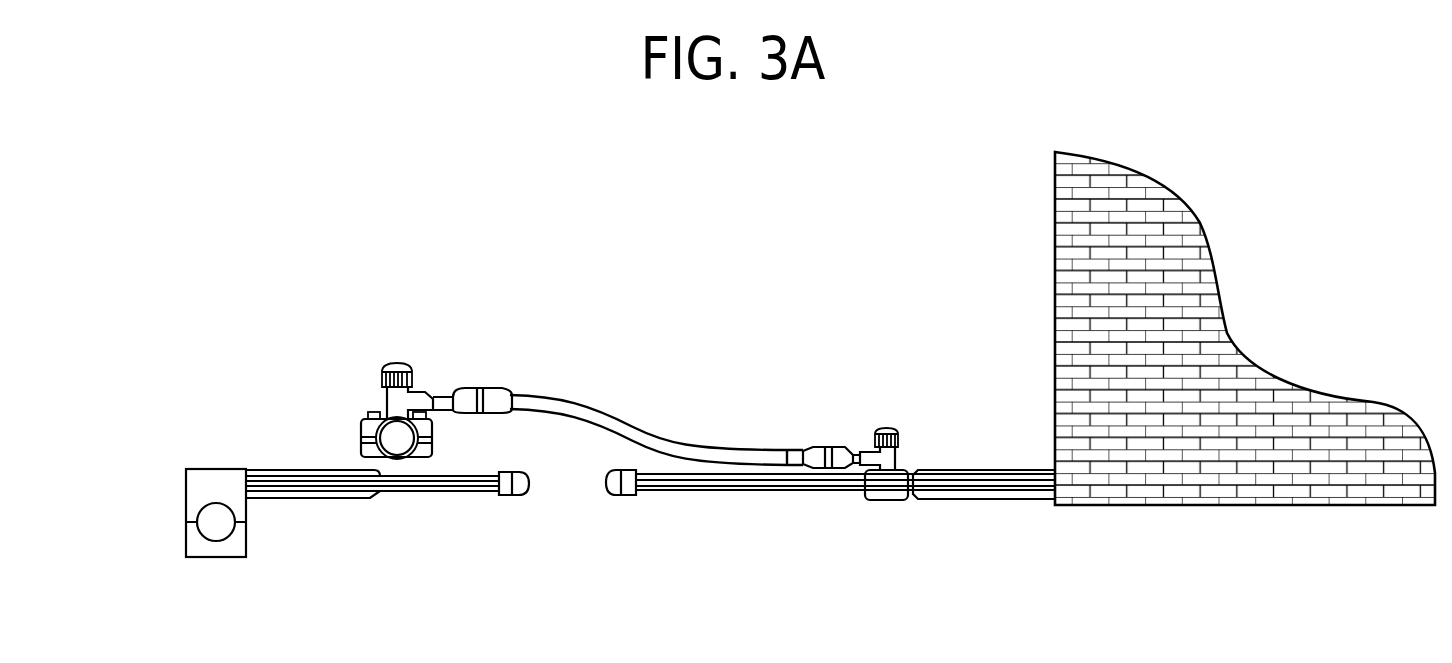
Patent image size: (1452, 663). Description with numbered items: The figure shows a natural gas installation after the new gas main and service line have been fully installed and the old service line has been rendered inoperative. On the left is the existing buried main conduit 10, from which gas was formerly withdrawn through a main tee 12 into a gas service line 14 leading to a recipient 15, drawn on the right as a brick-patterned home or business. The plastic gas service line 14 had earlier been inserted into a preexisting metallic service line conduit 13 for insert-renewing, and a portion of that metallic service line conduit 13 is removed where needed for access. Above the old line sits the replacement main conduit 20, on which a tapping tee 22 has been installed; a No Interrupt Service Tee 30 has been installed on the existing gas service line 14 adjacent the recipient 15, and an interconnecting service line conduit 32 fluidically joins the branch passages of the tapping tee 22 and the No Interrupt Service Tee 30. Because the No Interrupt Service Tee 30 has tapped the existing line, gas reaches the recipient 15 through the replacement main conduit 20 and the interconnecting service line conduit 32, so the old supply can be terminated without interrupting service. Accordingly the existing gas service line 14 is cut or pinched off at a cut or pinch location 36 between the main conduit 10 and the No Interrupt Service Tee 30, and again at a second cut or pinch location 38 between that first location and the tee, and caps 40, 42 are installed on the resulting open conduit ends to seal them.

The main conduit 10 is at (217, 528).
The main tee 12 is at (210, 478).
The metallic service line conduit 13 is at (338, 500).
The gas service line 14 is at (800, 490).
The recipient 15 is at (1067, 243).
The replacement main conduit 20 is at (390, 439).
The tapping tee 22 is at (392, 403).
The No Interrupt Service Tee 30 is at (897, 457).
The interconnecting service line conduit 32 is at (661, 438).
The cut or pinch location 36 is at (468, 492).
The second cut or pinch location 38 is at (670, 497).
The cap 40 is at (617, 500).
The cap 42 is at (517, 497).